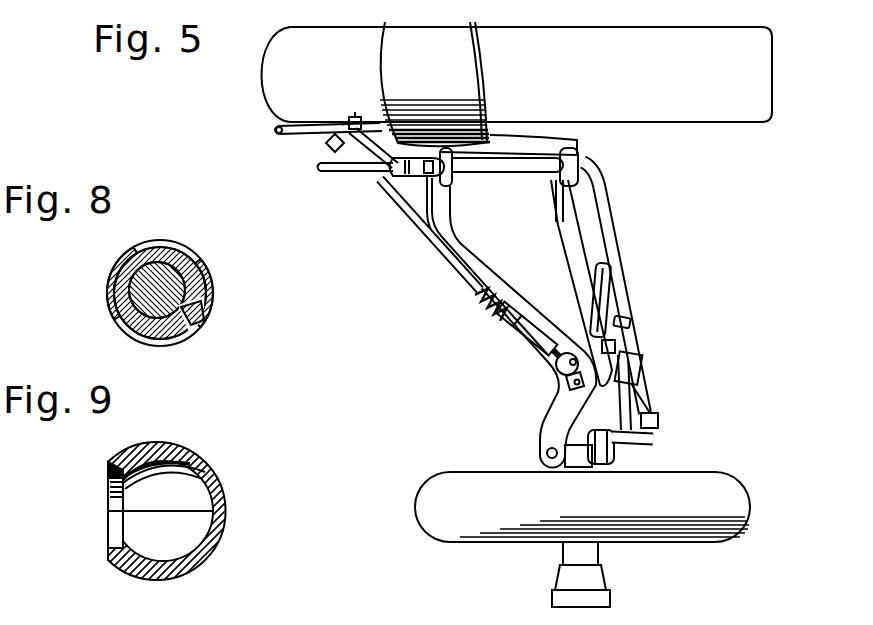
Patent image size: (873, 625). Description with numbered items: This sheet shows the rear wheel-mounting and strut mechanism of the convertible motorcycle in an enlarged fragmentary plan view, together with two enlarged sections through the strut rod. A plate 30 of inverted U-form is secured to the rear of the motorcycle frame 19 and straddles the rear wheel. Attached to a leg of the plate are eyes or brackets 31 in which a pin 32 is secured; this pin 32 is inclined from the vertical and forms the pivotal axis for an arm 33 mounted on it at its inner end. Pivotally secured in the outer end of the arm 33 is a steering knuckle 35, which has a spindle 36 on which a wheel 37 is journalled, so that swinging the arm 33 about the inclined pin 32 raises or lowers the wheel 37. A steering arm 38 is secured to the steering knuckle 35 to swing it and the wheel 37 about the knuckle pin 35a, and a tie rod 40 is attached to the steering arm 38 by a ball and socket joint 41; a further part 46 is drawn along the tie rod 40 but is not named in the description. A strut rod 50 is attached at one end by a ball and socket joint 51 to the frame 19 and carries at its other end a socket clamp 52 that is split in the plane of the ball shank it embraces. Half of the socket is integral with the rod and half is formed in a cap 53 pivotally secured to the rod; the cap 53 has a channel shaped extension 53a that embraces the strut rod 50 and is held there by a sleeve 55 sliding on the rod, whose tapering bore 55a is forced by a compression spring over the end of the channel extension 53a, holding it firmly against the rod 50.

In FIG. 5, the frame 19 is at (272, 131).
In FIG. 5, the plate 30 is at (441, 76).
In FIG. 5, the eyes or brackets 31 is at (447, 185).
In FIG. 5, the pin 32 is at (517, 168).
In FIG. 5, the arm 33 is at (433, 213).
In FIG. 5, the steering knuckle 35 is at (594, 470).
In FIG. 5, the knuckle pin 35a is at (546, 455).
In FIG. 5, the spindle 36 is at (578, 474).
In FIG. 5, the wheel 37 is at (727, 478).
In FIG. 5, the steering arm 38 is at (632, 446).
In FIG. 5, the tie rod 40 is at (612, 206).
In FIG. 5, the ball and socket joint 41 is at (655, 434).
In FIG. 5, the pad 46 is at (601, 282).
In FIG. 5, the strut rod 50 is at (400, 200).
In FIG. 8, the strut rod 50 is at (185, 280).
In FIG. 5, the ball and socket joint 51 is at (330, 140).
In FIG. 5, the socket clamp 52 is at (553, 373).
In FIG. 9, the socket clamp 52 is at (239, 467).
In FIG. 9, the cap 53 is at (213, 563).
In FIG. 8, the channel shaped extension 53a is at (192, 310).
In FIG. 5, the sleeve 55 is at (512, 323).
In FIG. 8, the sleeve 55 is at (190, 336).
In FIG. 8, the tapering bore 55a is at (182, 262).